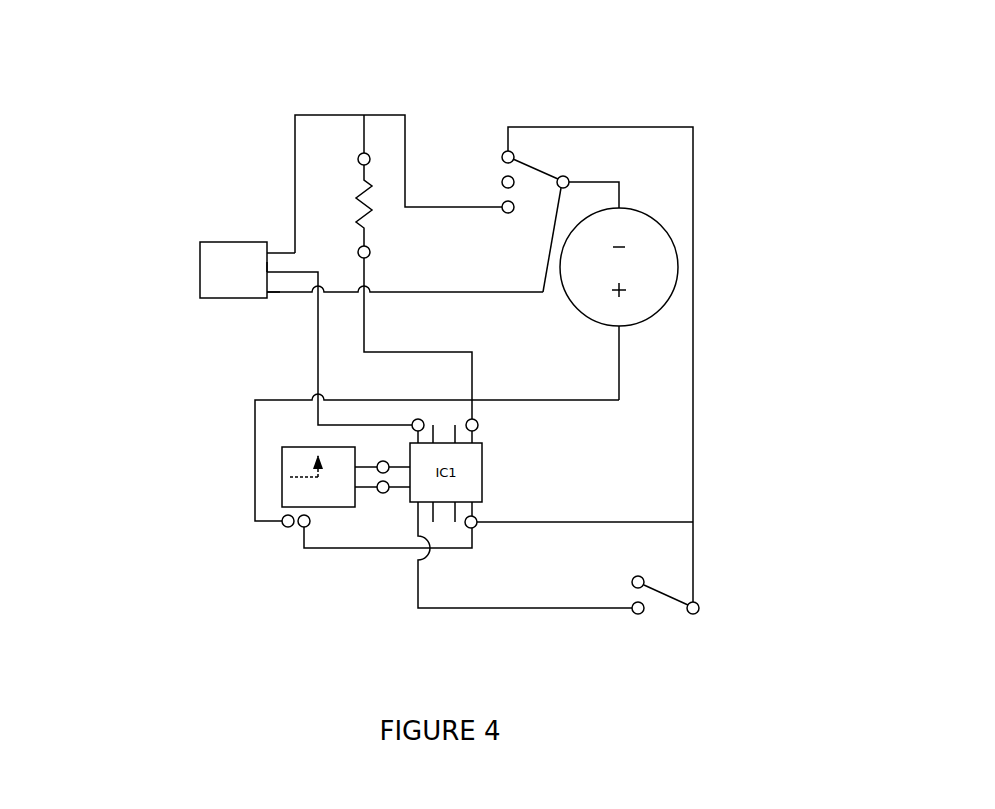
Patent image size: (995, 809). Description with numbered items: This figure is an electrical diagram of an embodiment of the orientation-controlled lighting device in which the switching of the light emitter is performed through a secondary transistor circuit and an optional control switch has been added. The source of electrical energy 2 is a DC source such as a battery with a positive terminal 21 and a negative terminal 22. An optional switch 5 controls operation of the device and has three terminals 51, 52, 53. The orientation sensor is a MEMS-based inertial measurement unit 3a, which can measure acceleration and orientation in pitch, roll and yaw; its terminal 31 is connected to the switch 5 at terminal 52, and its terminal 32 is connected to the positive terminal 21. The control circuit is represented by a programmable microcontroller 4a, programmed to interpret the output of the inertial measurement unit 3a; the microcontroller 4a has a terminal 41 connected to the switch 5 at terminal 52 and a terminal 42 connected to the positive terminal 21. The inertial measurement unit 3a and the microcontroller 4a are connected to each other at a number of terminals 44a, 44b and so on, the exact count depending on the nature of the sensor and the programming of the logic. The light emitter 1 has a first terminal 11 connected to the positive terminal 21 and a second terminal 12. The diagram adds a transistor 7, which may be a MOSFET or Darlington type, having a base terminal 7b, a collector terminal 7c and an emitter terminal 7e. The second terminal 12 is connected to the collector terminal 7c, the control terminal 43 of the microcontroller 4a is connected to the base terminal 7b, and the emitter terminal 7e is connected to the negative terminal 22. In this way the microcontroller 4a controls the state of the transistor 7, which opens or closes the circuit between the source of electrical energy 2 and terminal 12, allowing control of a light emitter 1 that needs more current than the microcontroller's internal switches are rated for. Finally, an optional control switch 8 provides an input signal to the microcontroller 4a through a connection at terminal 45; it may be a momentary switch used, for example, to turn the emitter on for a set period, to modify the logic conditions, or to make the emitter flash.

The light emitter 1 is at (385, 211).
The first terminal 11 is at (383, 252).
The second terminal 12 is at (350, 157).
The source of electrical energy 2 is at (634, 275).
The positive terminal 21 is at (632, 342).
The negative terminal 22 is at (630, 192).
The inertial measurement unit 3a is at (333, 520).
The terminal 31 is at (300, 534).
The terminal 32 is at (280, 531).
The microcontroller 4a is at (442, 519).
The terminal 41 is at (481, 532).
The terminal 42 is at (484, 425).
The control terminal 43 is at (418, 416).
The terminal 44a is at (382, 455).
The terminal 44b is at (221, 402).
The terminal 45 is at (411, 514).
The switch 5 is at (559, 162).
The first terminal 51 is at (495, 199).
The terminal 52 is at (501, 147).
The terminal 53 is at (500, 174).
The transistor 7 is at (193, 278).
The base terminal 7b is at (276, 260).
The collector terminal 7c is at (289, 248).
The emitter terminal 7e is at (270, 306).
The control switch 8 is at (705, 602).